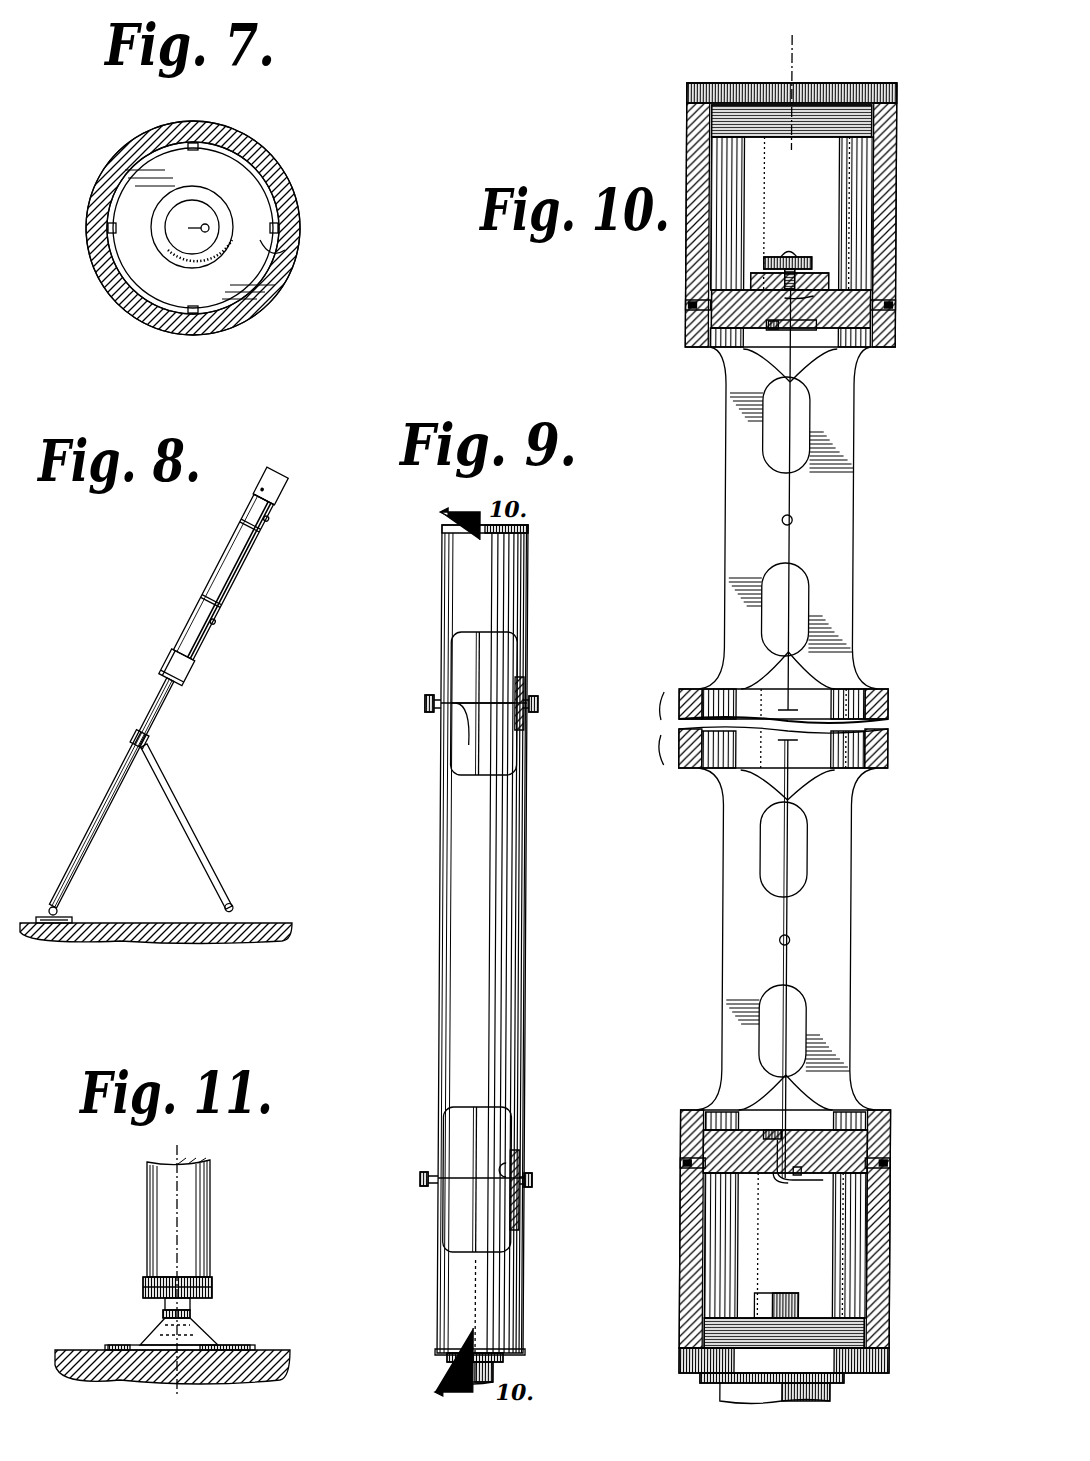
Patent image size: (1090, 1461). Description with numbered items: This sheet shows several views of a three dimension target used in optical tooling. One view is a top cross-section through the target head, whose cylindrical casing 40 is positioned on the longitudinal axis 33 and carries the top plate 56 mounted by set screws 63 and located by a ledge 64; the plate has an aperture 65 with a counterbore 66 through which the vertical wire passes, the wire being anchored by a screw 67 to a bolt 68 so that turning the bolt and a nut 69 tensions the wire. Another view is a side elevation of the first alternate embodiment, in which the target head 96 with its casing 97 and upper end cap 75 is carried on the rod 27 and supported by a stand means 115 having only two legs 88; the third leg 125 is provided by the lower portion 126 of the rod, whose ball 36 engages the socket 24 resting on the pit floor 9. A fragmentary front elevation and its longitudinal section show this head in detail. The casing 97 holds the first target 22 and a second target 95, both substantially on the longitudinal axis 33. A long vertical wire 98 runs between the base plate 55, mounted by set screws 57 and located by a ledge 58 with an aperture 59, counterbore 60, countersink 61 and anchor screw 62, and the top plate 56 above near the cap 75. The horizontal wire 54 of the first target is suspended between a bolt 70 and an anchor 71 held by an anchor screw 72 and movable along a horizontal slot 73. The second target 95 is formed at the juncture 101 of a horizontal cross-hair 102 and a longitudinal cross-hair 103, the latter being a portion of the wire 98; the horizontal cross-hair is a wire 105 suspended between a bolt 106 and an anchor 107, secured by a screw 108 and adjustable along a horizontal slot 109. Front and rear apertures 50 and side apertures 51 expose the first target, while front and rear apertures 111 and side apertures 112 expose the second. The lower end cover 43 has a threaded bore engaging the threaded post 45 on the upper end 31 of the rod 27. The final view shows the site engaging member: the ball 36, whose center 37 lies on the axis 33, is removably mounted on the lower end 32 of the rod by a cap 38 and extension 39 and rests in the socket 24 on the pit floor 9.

In FIG. 8, the pit floor 9 is at (260, 922).
In FIG. 11, the pit floor 9 is at (70, 1350).
In FIG. 9, the target 22 is at (494, 1170).
In FIG. 8, the socket 24 is at (54, 915).
In FIG. 11, the socket 24 is at (216, 1342).
In FIG. 10, the rod 27 is at (732, 1394).
In FIG. 11, the rod 27 is at (212, 1196).
In FIG. 9, the upper end 31 is at (456, 1372).
In FIG. 10, the upper end 31 is at (842, 1394).
In FIG. 11, the lower end 32 is at (212, 1282).
In FIG. 10, the longitudinal axis 33 is at (796, 64).
In FIG. 11, the longitudinal axis 33 is at (186, 1158).
In FIG. 11, the ball 36 is at (158, 1332).
In FIG. 11, the center 37 is at (192, 1320).
In FIG. 11, the cap 38 is at (142, 1284).
In FIG. 11, the extension 39 is at (164, 1306).
In FIG. 7, the cylindrical casing 40 is at (266, 162).
In FIG. 8, the lower end cover 43 is at (177, 667).
In FIG. 9, the lower end cover 43 is at (528, 1356).
In FIG. 10, the lower end cover 43 is at (686, 1362).
In FIG. 10, the threaded post 45 is at (785, 1293).
In FIG. 8, the front and rear apertures 50 is at (211, 601).
In FIG. 10, the front and rear apertures 50 is at (718, 780).
In FIG. 10, the side apertures 51 is at (768, 870).
In FIG. 9, the horizontal wire 54 is at (497, 1182).
In FIG. 10, the horizontal wire 54 is at (796, 938).
In FIG. 10, the base plate 55 is at (876, 1142).
In FIG. 7, the top plate 56 is at (262, 215).
In FIG. 10, the top plate 56 is at (712, 324).
In FIG. 9, the set screws 57 is at (481, 1272).
In FIG. 10, the set screws 57 is at (896, 1180).
In FIG. 10, the ledge 58 is at (714, 1162).
In FIG. 10, the aperture 59 is at (782, 1150).
In FIG. 10, the counterbore 60 is at (804, 1138).
In FIG. 10, the countersink 61 is at (790, 1180).
In FIG. 10, the anchor screw 62 is at (810, 1178).
In FIG. 7, the set screws 63 is at (112, 226).
In FIG. 9, the set screws 63 is at (482, 614).
In FIG. 10, the set screws 63 is at (886, 298).
In FIG. 7, the ledge 64 is at (284, 254).
In FIG. 10, the ledge 64 is at (690, 297).
In FIG. 10, the aperture 65 is at (798, 300).
In FIG. 10, the counterbore 66 is at (776, 318).
In FIG. 7, the screw 67 is at (207, 225).
In FIG. 10, the screw 67 is at (808, 254).
In FIG. 7, the bolt 68 is at (170, 239).
In FIG. 10, the bolt 68 is at (782, 256).
In FIG. 7, the nut 69 is at (165, 252).
In FIG. 10, the nut 69 is at (830, 286).
In FIG. 9, the bolt 70 is at (426, 1184).
In FIG. 8, the anchor 71 is at (212, 621).
In FIG. 9, the anchor 71 is at (526, 1182).
In FIG. 9, the anchor screw 72 is at (538, 1176).
In FIG. 9, the horizontal slot 73 is at (516, 1150).
In FIG. 8, the top cap 75 is at (270, 486).
In FIG. 9, the top cap 75 is at (528, 531).
In FIG. 10, the top cap 75 is at (688, 86).
In FIG. 8, the legs 88 is at (187, 828).
In FIG. 9, the second target 95 is at (504, 690).
In FIG. 8, the target head 96 is at (223, 576).
In FIG. 9, the target head 96 is at (539, 829).
In FIG. 10, the target head 96 is at (678, 129).
In FIG. 8, the casing 97 is at (229, 580).
In FIG. 9, the casing 97 is at (528, 888).
In FIG. 10, the casing 97 is at (892, 712).
In FIG. 8, the vertical wire 98 is at (250, 525).
In FIG. 9, the vertical wire 98 is at (478, 1222).
In FIG. 10, the vertical wire 98 is at (788, 963).
In FIG. 9, the juncture 101 is at (476, 697).
In FIG. 9, the horizontal cross-hair 102 is at (454, 723).
In FIG. 9, the longitudinal cross-hair 103 is at (492, 655).
In FIG. 10, the longitudinal cross-hair 103 is at (794, 552).
In FIG. 9, the wire 105 is at (458, 730).
In FIG. 10, the wire 105 is at (796, 518).
In FIG. 9, the bolt 106 is at (430, 694).
In FIG. 8, the anchor 107 is at (266, 518).
In FIG. 9, the anchor 107 is at (530, 722).
In FIG. 9, the screw 108 is at (540, 702).
In FIG. 9, the horizontal slot 109 is at (510, 712).
In FIG. 8, the front and rear apertures 111 is at (264, 499).
In FIG. 10, the front and rear apertures 111 is at (718, 368).
In FIG. 10, the side apertures 112 is at (806, 410).
In FIG. 8, the stand means 115 is at (139, 739).
In FIG. 8, the third leg 125 is at (111, 793).
In FIG. 8, the lower portion 126 is at (113, 794).